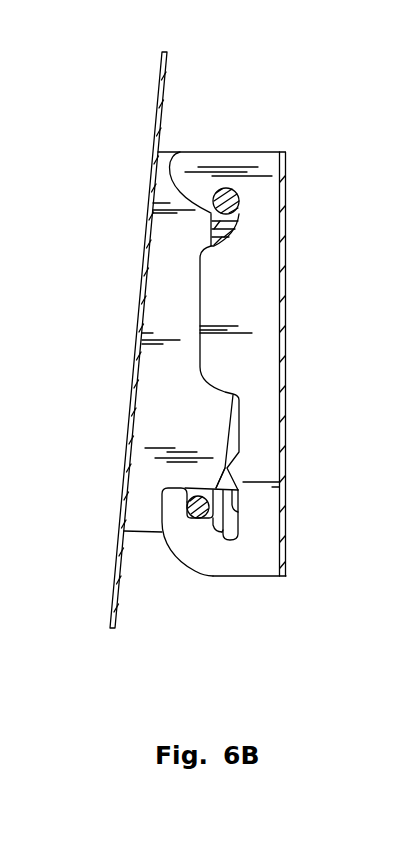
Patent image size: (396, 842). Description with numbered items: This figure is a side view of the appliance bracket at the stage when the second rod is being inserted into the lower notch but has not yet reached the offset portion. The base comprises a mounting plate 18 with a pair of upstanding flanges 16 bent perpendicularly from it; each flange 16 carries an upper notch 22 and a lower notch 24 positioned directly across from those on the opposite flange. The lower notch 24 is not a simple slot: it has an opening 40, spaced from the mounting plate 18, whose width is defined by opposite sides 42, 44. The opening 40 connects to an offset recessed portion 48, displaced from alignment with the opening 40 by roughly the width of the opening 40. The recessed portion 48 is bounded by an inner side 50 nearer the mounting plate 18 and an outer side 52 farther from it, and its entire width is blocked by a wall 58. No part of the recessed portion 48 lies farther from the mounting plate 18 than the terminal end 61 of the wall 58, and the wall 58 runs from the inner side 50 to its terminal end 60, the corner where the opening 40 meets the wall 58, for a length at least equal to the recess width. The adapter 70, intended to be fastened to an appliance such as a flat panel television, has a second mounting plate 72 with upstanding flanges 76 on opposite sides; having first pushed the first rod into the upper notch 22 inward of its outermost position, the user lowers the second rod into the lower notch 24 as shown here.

The upstanding flange 16 is at (230, 157).
The mounting plate 18 is at (287, 249).
The upper notch 22 is at (203, 228).
The lower notch 24 is at (185, 479).
The opening 40 is at (202, 485).
The side of opening 42 is at (180, 508).
The side of opening 44 is at (217, 484).
The offset recessed portion 48 is at (233, 515).
The inner side 50 is at (235, 520).
The outer side 52 is at (214, 522).
The wall 58 is at (240, 510).
The terminal end of wall 60 is at (188, 503).
The terminal end 61 is at (221, 532).
The adapter 70 is at (147, 130).
The second mounting plate 72 is at (164, 64).
The upstanding flange 76 is at (167, 315).